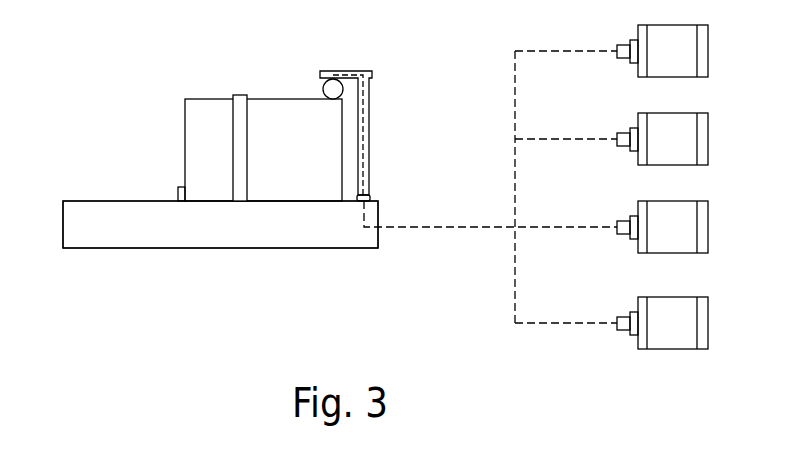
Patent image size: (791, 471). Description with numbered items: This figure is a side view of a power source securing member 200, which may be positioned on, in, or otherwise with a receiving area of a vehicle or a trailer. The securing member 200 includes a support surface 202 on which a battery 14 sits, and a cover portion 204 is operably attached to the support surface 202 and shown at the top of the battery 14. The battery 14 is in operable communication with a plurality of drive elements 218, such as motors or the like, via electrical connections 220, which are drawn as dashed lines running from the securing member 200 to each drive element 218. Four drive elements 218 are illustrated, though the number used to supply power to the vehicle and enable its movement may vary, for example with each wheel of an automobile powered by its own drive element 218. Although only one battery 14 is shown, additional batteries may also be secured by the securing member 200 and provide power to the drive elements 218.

The power source securing member 200 is at (61, 264).
The support surface 202 is at (96, 200).
The battery 14 is at (303, 158).
The cover portion 204 is at (333, 71).
The electrical connections 220 is at (430, 226).
The drive elements 218 is at (689, 332).